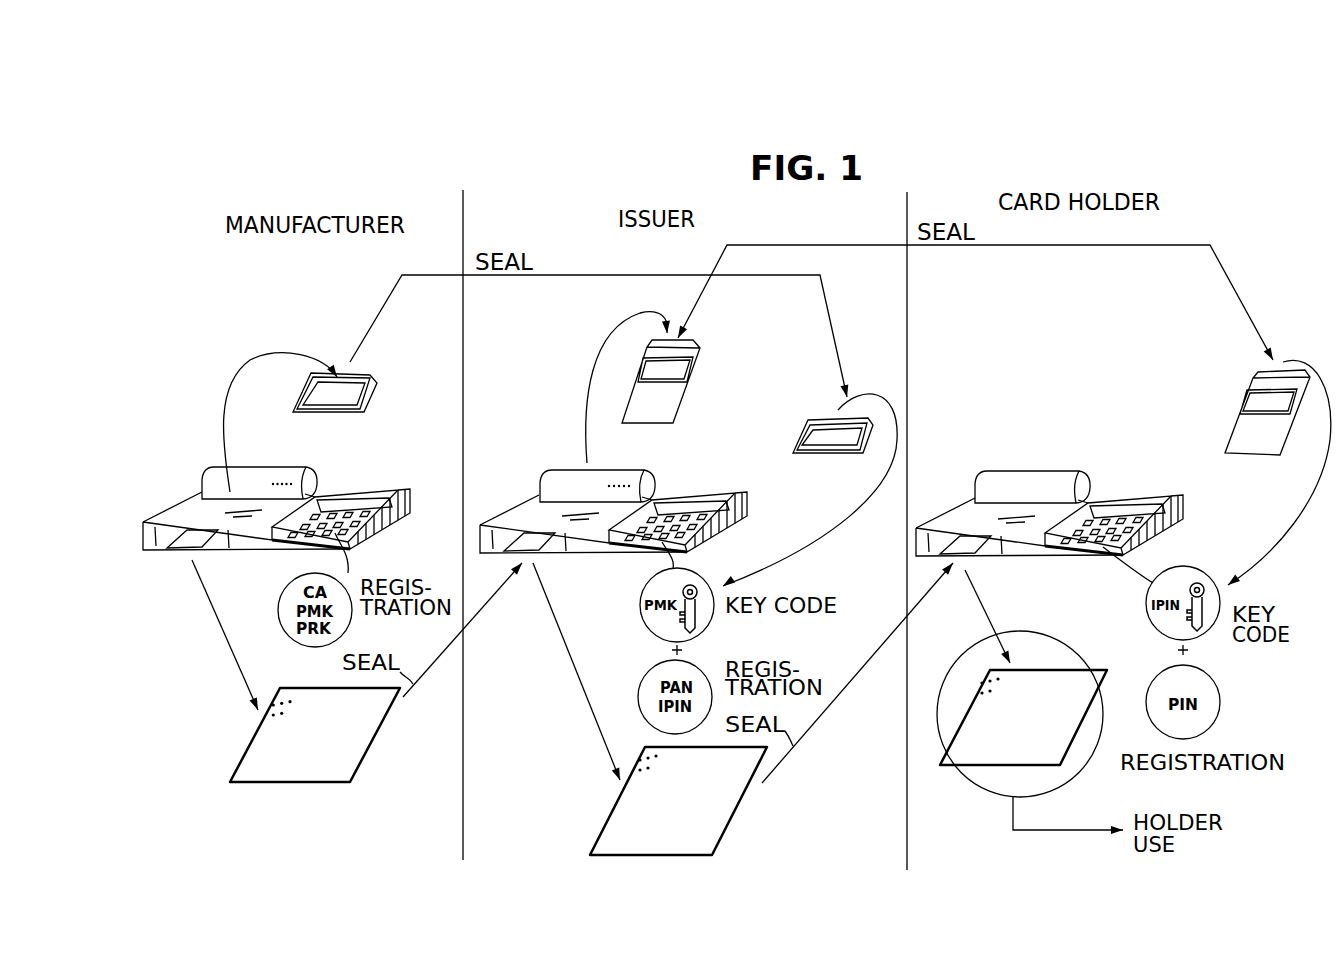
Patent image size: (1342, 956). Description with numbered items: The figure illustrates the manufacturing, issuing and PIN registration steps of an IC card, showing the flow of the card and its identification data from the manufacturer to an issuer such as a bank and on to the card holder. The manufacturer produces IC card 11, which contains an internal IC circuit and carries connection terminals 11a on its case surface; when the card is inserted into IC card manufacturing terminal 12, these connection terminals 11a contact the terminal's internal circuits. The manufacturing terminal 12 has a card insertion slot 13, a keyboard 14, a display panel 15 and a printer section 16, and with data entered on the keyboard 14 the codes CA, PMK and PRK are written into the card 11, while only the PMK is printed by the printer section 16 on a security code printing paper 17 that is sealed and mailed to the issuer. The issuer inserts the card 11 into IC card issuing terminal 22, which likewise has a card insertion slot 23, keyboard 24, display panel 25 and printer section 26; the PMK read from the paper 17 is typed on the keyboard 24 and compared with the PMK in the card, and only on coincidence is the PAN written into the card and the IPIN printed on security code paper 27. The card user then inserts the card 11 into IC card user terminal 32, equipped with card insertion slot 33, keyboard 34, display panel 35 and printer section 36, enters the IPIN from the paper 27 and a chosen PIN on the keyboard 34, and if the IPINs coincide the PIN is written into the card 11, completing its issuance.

The IC card 11 is at (180, 544).
The connection terminals 11a is at (280, 693).
The IC card manufacturing terminal 12 is at (276, 510).
The card insertion slot 13 is at (218, 534).
The keyboard 14 is at (297, 534).
The display panel 15 is at (368, 503).
The printer section 16 is at (314, 494).
The security code printing paper 17 is at (289, 472).
The IC card issuing terminal 22 is at (641, 513).
The card insertion slot 23 is at (567, 534).
The keyboard 24 is at (647, 541).
The display panel 25 is at (747, 512).
The printer section 26 is at (660, 491).
The security code paper 27 is at (620, 473).
The IC card user terminal 32 is at (1076, 514).
The card insertion slot 33 is at (993, 538).
The keyboard 34 is at (1093, 547).
The display panel 35 is at (1177, 514).
The printer section 36 is at (1095, 500).